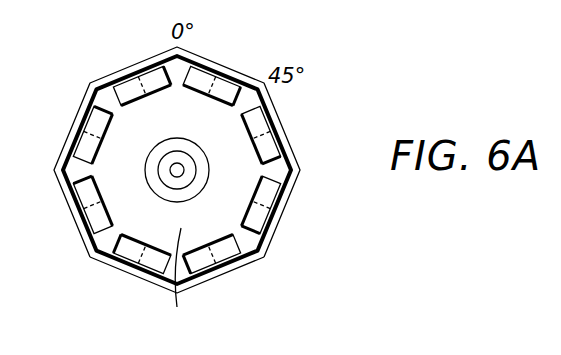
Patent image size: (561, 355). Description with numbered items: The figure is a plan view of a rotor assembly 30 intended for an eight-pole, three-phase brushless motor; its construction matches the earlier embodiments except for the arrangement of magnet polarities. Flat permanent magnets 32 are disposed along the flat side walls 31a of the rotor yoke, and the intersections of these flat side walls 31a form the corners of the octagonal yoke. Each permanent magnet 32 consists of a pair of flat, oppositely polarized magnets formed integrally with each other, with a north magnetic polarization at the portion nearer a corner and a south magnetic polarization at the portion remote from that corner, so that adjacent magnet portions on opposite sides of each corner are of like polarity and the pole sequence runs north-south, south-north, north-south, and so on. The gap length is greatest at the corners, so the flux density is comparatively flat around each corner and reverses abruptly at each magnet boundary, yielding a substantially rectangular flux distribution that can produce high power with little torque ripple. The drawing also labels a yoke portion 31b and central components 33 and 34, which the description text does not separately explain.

The rotor assembly 30 is at (196, 181).
The flat side walls 31a is at (63, 147).
The housing section 31b is at (177, 284).
The flat permanent magnets 32 is at (110, 77).
The rotor 33 is at (176, 151).
The shaft 34 is at (180, 165).